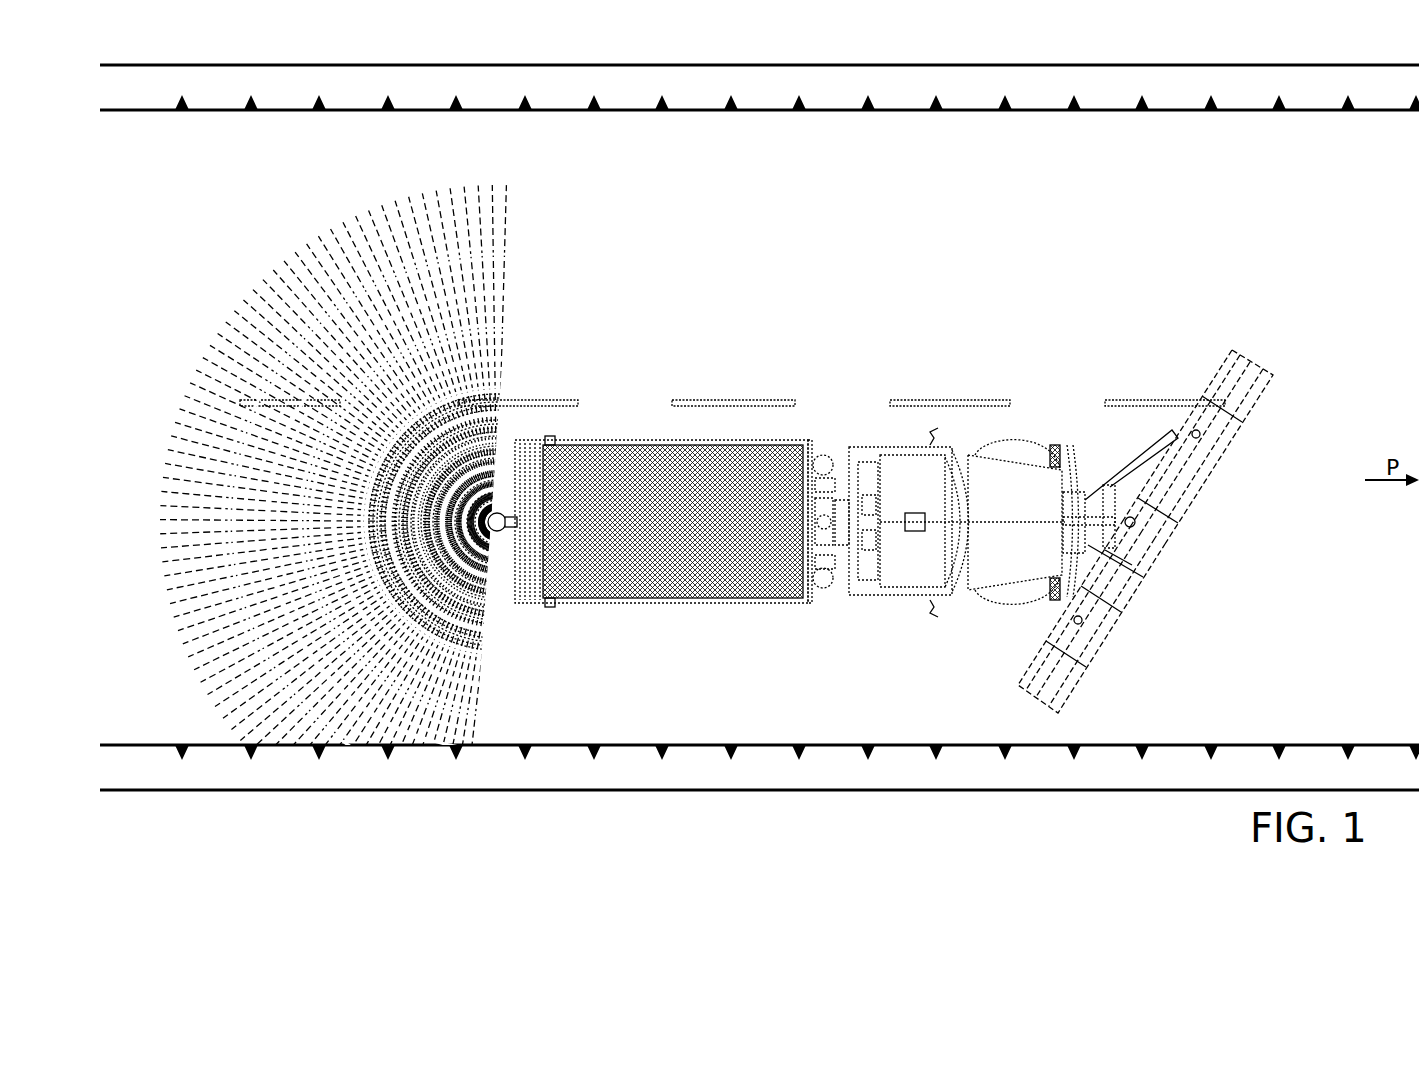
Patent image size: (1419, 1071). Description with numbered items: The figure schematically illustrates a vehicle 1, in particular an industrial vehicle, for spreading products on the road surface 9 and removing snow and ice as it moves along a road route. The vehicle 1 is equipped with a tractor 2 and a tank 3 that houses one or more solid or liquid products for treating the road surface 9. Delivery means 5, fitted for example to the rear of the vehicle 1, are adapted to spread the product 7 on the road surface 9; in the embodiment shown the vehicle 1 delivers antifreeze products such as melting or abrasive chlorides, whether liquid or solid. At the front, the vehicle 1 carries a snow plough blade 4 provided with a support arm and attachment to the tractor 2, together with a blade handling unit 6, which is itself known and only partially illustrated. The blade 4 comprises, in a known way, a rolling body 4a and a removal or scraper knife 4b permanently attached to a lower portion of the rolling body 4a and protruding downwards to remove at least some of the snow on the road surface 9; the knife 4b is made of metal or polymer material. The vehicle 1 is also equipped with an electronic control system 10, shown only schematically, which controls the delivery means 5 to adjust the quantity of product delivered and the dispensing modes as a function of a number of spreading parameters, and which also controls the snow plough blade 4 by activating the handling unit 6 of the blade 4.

The vehicle 1 is at (931, 475).
The tractor 2 is at (906, 465).
The tank 3 is at (622, 458).
The snow plough blade 4 is at (1183, 496).
The rolling body 4a is at (1250, 392).
The removal knife 4b is at (1190, 503).
The delivery means 5 is at (498, 531).
The blade handling unit 6 is at (1088, 480).
The product 7 is at (225, 337).
The road surface 9 is at (683, 133).
The electronic control system 10 is at (913, 533).